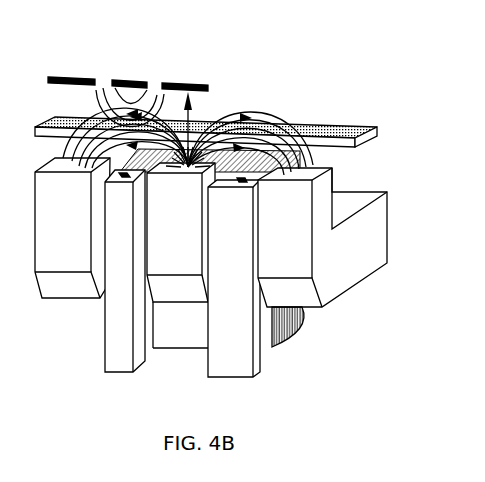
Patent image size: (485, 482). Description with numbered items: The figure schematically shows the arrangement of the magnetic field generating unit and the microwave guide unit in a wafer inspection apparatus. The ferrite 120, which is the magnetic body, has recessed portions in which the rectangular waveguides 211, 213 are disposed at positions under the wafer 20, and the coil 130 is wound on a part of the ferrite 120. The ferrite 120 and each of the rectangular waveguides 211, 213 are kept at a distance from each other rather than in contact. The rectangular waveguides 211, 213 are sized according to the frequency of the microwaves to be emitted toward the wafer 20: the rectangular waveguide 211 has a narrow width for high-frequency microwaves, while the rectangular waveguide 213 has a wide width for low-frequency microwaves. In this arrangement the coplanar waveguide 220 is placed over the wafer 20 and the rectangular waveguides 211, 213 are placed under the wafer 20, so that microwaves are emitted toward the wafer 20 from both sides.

The wafer 20 is at (377, 137).
The ferrite 120 is at (352, 277).
The coil 130 is at (320, 323).
The rectangular waveguide 211 is at (112, 337).
The rectangular waveguide 213 is at (264, 362).
The coplanar waveguide 220 is at (195, 80).